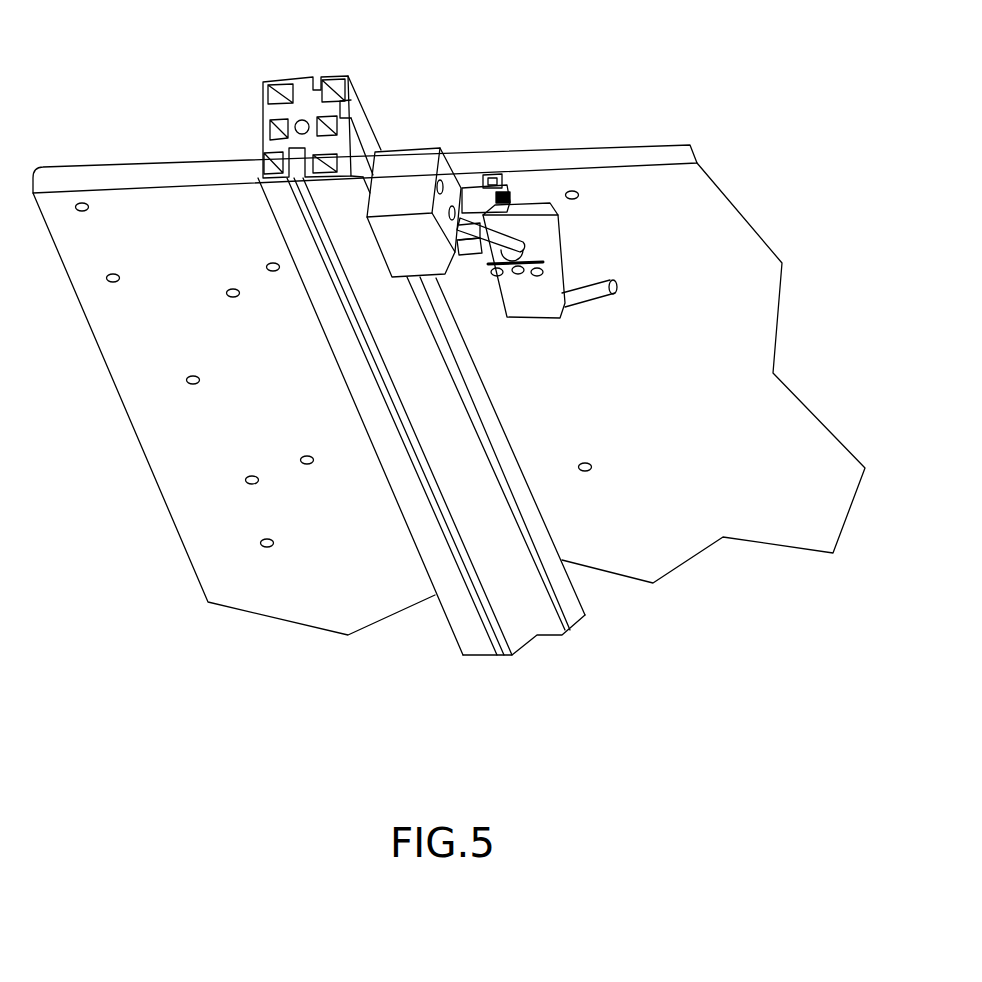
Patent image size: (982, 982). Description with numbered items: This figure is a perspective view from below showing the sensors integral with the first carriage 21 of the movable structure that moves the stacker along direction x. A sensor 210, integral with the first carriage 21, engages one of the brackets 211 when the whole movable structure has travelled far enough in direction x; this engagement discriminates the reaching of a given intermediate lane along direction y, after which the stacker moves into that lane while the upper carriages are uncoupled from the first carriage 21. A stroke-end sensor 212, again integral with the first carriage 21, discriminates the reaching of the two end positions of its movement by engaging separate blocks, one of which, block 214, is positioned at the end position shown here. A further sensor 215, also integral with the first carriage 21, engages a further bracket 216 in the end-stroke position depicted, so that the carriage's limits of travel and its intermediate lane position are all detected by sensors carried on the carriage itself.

The first carriage 21 is at (638, 490).
The sensor 210 is at (468, 261).
The bracket 211 is at (467, 250).
The stroke-end sensor 212 is at (533, 302).
The block 214 is at (408, 170).
The further sensor 215 is at (472, 202).
The further bracket 216 is at (462, 186).